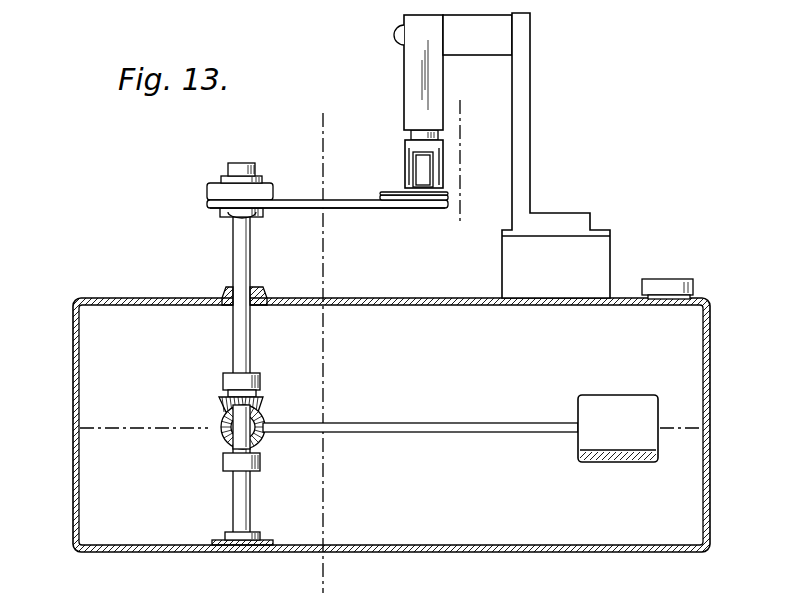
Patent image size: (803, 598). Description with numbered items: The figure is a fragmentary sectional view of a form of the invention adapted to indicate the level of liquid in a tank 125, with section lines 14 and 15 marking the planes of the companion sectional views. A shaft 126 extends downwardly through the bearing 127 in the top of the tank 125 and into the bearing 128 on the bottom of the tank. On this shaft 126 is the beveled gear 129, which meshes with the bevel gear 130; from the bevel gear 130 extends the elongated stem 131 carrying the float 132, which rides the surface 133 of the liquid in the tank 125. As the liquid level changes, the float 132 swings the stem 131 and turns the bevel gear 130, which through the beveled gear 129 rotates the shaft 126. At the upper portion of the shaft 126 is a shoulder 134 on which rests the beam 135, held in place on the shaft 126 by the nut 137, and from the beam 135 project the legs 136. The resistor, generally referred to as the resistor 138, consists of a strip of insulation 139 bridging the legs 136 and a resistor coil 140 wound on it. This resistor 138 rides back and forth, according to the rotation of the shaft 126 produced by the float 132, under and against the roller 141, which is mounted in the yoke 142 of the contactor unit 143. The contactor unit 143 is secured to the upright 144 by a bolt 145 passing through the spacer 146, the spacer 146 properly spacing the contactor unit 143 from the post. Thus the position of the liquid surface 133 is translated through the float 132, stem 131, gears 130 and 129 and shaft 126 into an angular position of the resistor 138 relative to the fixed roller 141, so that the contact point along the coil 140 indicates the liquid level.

The section line 14- 14 is at (302, 138).
The section line 15- 15 is at (447, 116).
The tank 125 is at (170, 282).
The shaft 126 is at (233, 238).
The bearing 127 is at (264, 288).
The bearing 128 is at (215, 538).
The beveled gear 129 is at (219, 401).
The bevel gear 130 is at (222, 432).
The elongated stem 131 is at (420, 423).
The float 132 is at (612, 384).
The surface 133 is at (683, 428).
The shoulder 134 is at (220, 212).
The beam 135 is at (207, 192).
The legs 136 is at (288, 198).
The nut 137 is at (258, 168).
The resistor 138 is at (389, 209).
The strip of insulation 139 is at (414, 201).
The resistor coil 140 is at (384, 192).
The roller 141 is at (418, 160).
The yoke 142 is at (408, 142).
The contactor unit 143 is at (404, 60).
The upright 144 is at (530, 103).
The bolt 145 is at (398, 32).
The spacer 146 is at (512, 35).